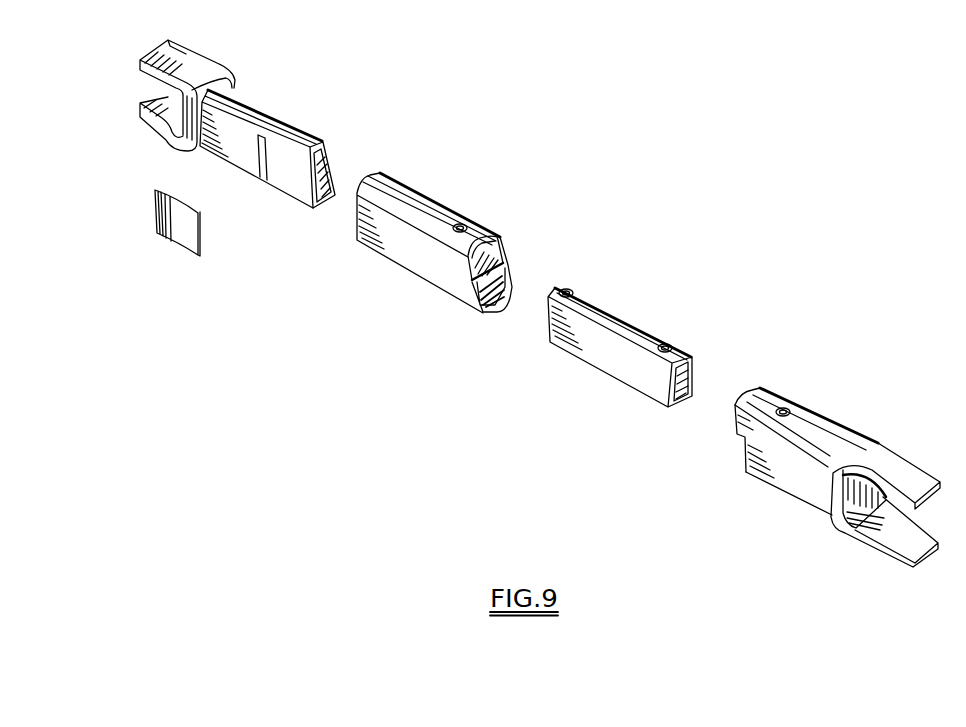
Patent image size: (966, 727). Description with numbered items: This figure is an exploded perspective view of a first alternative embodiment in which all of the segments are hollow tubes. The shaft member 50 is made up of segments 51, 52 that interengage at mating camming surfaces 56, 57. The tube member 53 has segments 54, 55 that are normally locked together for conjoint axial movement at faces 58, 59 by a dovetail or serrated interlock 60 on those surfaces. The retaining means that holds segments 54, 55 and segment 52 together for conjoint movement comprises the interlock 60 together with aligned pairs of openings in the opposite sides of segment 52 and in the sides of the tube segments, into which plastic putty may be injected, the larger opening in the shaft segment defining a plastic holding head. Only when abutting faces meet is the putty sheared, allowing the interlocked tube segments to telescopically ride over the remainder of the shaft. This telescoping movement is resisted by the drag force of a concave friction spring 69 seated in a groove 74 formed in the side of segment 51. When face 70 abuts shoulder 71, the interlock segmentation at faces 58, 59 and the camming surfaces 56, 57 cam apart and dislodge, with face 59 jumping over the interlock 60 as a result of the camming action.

The shaft member 50 is at (312, 130).
The segment 51 is at (278, 127).
The segment 52 is at (622, 313).
The tube member 53 is at (495, 313).
The segment 54 is at (398, 270).
The segment 55 is at (834, 428).
The camming surface 56 is at (346, 165).
The camming surface 57 is at (546, 312).
The face 58 is at (506, 238).
The face 59 is at (730, 413).
The dovetail or serrated interlock 60 is at (512, 263).
The concave friction spring 69 is at (180, 230).
The face 70 is at (376, 173).
The shoulder 71 is at (232, 88).
The groove 74 is at (268, 133).